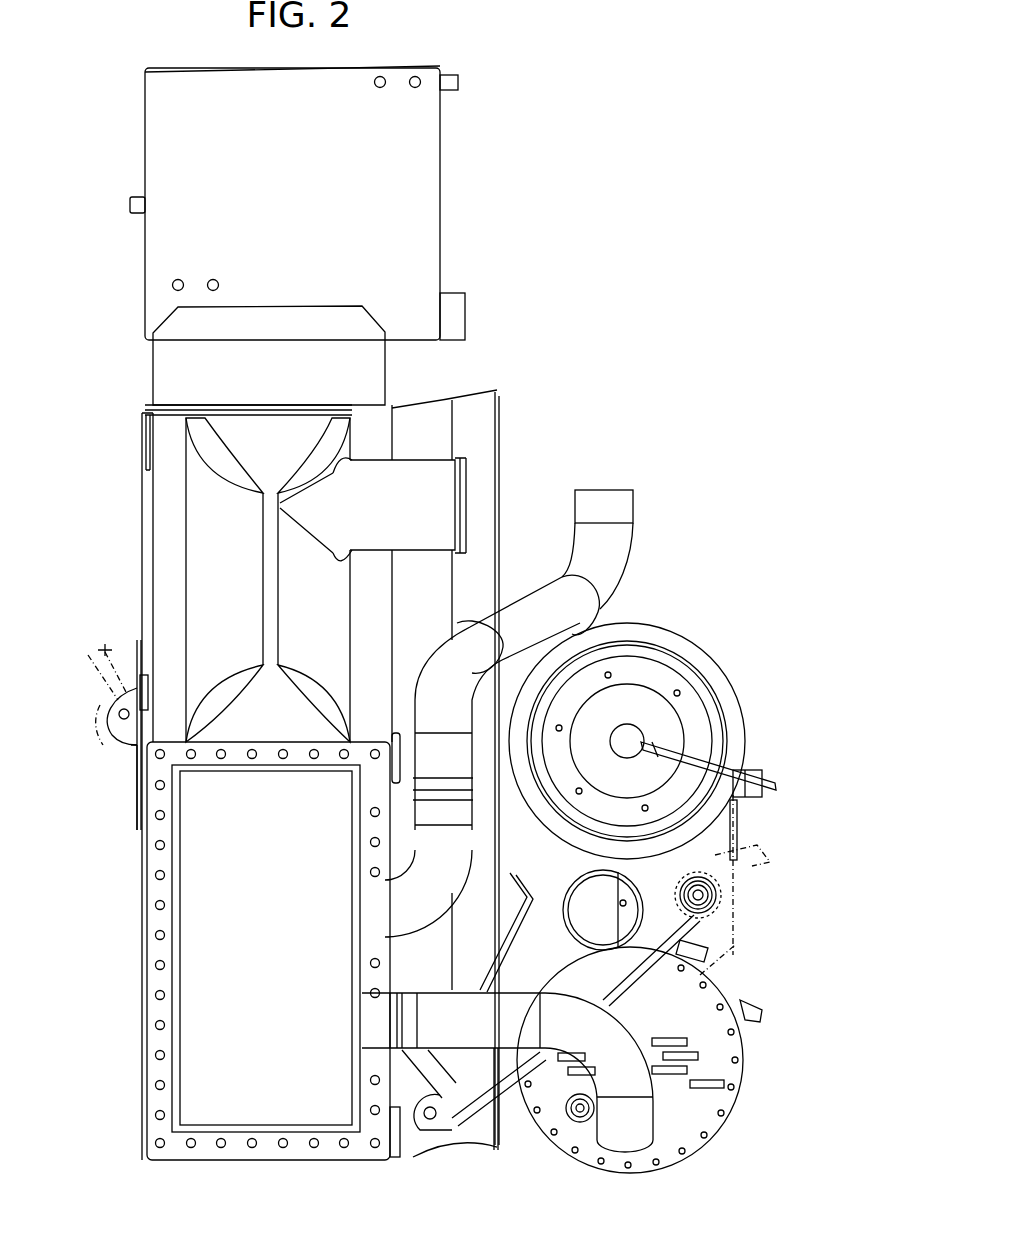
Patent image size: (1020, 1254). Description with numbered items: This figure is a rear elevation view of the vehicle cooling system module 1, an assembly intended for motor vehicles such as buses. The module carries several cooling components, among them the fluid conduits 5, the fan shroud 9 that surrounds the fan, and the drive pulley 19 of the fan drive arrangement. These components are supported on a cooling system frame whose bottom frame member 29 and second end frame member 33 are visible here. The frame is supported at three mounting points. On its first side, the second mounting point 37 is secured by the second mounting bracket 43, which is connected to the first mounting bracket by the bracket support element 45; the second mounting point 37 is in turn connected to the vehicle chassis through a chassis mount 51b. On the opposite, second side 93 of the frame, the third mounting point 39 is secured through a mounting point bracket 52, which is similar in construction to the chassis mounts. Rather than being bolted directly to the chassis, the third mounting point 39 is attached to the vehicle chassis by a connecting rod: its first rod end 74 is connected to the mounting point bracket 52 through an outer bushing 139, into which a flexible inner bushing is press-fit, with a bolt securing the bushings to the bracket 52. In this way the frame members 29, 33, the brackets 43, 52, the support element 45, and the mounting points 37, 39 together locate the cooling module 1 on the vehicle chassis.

The cooling system module 1 is at (622, 250).
The second side of frame 93 is at (140, 433).
The fan shroud 9 is at (480, 420).
The fluid conduits 5 is at (618, 548).
The drive pulley 19 is at (650, 637).
The bracket support element 45 is at (700, 870).
The second mounting point 37 is at (756, 900).
The chassis mount 51b is at (733, 918).
The second mounting bracket 43 is at (725, 952).
The bottom frame member 29 is at (363, 1160).
The second end frame member 33 is at (402, 1083).
The outer bushing 139 is at (102, 712).
The first rod end 74 is at (105, 648).
The third mounting point 39 is at (91, 743).
The mounting point bracket 52 is at (132, 730).